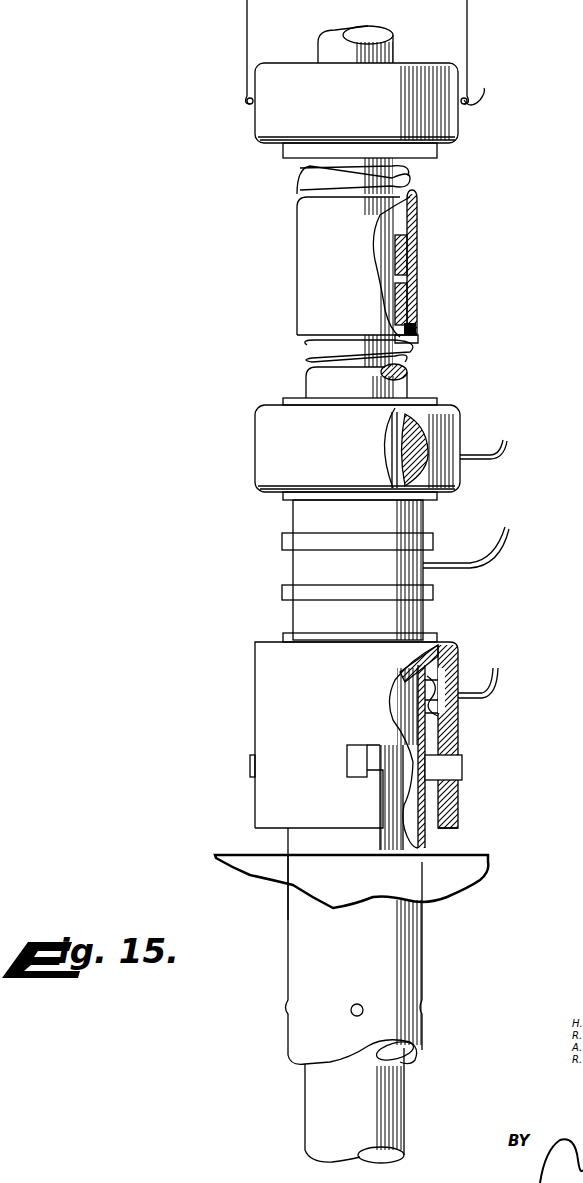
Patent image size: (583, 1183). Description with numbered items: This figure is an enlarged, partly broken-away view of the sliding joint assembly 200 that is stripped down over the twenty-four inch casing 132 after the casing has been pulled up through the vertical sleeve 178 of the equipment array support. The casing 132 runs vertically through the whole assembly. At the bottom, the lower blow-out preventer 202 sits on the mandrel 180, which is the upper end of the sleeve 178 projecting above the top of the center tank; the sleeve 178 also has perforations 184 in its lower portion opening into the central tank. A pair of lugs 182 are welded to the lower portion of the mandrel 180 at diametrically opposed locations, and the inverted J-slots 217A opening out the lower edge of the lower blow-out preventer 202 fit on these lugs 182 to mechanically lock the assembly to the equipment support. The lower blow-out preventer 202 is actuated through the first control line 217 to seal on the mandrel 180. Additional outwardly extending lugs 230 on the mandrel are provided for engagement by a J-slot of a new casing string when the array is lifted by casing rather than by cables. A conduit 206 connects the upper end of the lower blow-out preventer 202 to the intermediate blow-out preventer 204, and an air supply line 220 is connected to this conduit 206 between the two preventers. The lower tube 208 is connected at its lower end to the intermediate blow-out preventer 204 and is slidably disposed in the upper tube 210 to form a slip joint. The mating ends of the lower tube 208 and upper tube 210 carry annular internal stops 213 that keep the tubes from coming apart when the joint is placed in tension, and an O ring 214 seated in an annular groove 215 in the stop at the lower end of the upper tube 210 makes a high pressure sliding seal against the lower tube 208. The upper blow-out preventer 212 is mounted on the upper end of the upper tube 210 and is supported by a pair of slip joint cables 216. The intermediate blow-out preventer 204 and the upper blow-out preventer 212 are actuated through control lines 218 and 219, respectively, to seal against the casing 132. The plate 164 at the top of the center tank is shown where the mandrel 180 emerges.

The casing 132 is at (395, 46).
The slip joint cables 216 is at (252, 45).
The control line 219 is at (484, 104).
The upper blow-out preventer 212 is at (462, 141).
The upper tube 210 is at (420, 236).
The annular internal stops 213 is at (412, 243).
The annular groove 215 is at (417, 329).
The O ring 214 is at (420, 330).
The lower tube 208 is at (410, 388).
The sliding joint assembly 200 is at (240, 372).
The intermediate blow-out preventer 204 is at (258, 455).
The control line 218 is at (500, 450).
The conduit 206 is at (293, 524).
The air supply line 220 is at (497, 556).
The lower blow-out preventer 202 is at (255, 668).
The outwardly extending lugs 230 is at (447, 645).
The mandrel 180 is at (428, 695).
The first control line 217 is at (470, 688).
The inverted J-slots 217A is at (362, 747).
The lugs 182 is at (250, 767).
The plate 164 is at (500, 871).
The sleeve 178 is at (424, 977).
The perforations 184 is at (356, 1003).